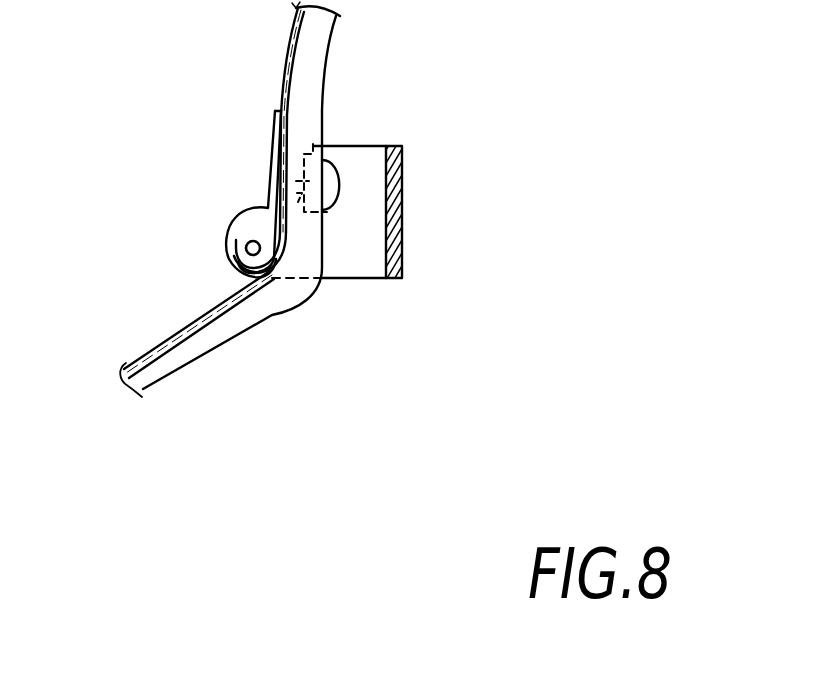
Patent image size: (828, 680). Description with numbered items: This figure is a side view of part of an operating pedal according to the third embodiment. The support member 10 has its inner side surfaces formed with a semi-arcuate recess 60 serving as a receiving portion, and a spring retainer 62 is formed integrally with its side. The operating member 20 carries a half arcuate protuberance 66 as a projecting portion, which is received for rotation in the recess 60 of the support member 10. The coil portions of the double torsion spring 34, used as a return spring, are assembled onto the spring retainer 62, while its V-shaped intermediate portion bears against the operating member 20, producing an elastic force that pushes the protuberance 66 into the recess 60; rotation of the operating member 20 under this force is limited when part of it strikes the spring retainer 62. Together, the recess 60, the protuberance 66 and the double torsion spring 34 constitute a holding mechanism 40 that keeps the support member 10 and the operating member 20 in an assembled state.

The support member 10 is at (402, 218).
The operating member 20 is at (288, 44).
The double torsion spring 34 is at (268, 190).
The holding mechanism 40 is at (254, 202).
The semi-arcuate recess 60 is at (338, 165).
The spring retainer 62 is at (232, 261).
The half arcuate protuberance 66 is at (298, 181).